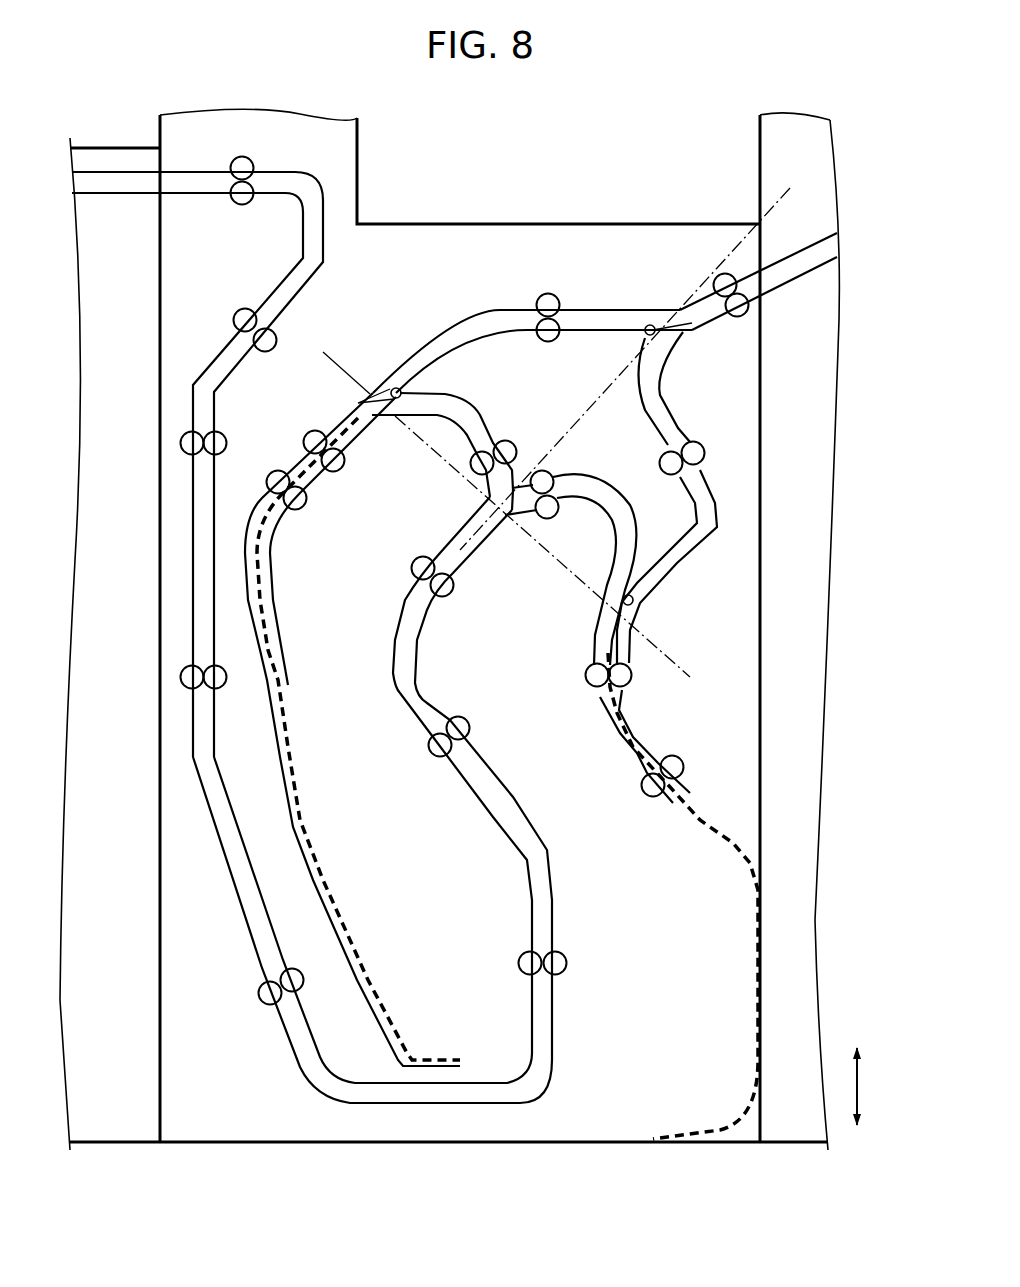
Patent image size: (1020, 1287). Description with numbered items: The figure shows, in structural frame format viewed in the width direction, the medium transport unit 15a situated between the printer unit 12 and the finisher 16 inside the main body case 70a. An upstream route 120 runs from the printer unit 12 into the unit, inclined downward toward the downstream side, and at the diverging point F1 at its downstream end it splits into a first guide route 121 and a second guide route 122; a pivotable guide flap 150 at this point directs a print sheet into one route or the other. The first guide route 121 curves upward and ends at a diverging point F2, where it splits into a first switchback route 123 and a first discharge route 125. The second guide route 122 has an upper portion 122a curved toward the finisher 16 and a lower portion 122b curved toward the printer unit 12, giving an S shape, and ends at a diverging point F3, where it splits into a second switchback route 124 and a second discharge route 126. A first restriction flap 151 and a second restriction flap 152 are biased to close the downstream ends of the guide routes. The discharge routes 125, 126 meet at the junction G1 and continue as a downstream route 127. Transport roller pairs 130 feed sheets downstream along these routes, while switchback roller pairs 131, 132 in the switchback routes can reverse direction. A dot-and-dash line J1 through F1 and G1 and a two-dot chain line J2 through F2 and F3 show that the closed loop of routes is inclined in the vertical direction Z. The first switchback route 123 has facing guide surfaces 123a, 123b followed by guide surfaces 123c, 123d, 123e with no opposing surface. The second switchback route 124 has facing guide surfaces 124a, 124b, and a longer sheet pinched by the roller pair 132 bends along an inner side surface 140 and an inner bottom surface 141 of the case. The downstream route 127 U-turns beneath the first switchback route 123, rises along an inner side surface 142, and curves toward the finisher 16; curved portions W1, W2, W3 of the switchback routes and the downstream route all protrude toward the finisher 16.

The finisher 16 is at (132, 147).
The printer unit 12 is at (760, 128).
The medium transport unit 15a is at (552, 222).
The main body case 70a is at (762, 805).
The inner side surface 142 is at (161, 1075).
The inner bottom surface 141 is at (610, 1140).
The first guide route 121 is at (466, 310).
The upstream route 120 is at (789, 294).
The guide flap 150 is at (660, 322).
The first restriction flap 151 is at (395, 387).
The second restriction flap 152 is at (633, 607).
The second guide route 122 is at (669, 497).
The upper portion of second guide route 122a is at (632, 398).
The lower portion of second guide route 122b is at (719, 538).
The first switchback route 123 is at (290, 458).
The guide surface 123a is at (255, 613).
The guide surface 123b is at (268, 583).
The guide surface 123c is at (283, 742).
The guide surface 123d is at (355, 940).
The guide surface 123e is at (440, 1059).
The second switchback route 124 is at (660, 747).
The guide surface 124a is at (620, 712).
The guide surface 124b is at (617, 737).
The first discharge route 125 is at (487, 416).
The second discharge route 126 is at (603, 476).
The downstream route 127 is at (513, 794).
The transport roller pair 130 is at (254, 163).
The switchback roller pair 131 is at (346, 460).
The switchback roller pair 132 is at (587, 675).
The inner side surface 140 is at (757, 993).
The dot-and-dash line J1 is at (780, 203).
The two-dot chain line J2 is at (688, 658).
The diverging point F1 is at (636, 341).
The diverging point F2 is at (415, 386).
The diverging point F3 is at (639, 577).
The curved portion W1 is at (242, 538).
The curved portion W2 is at (592, 703).
The curved portion W3 is at (389, 640).
The junction G1 is at (506, 531).
The vertical direction Z is at (869, 1086).